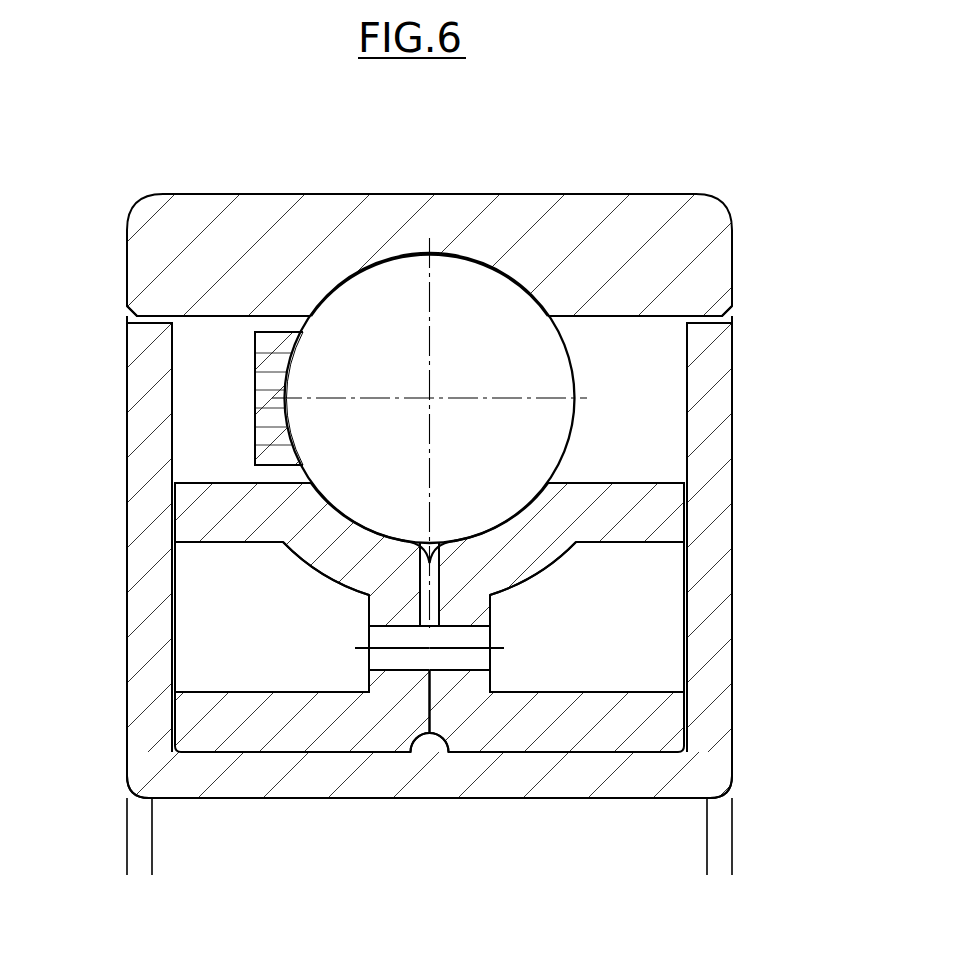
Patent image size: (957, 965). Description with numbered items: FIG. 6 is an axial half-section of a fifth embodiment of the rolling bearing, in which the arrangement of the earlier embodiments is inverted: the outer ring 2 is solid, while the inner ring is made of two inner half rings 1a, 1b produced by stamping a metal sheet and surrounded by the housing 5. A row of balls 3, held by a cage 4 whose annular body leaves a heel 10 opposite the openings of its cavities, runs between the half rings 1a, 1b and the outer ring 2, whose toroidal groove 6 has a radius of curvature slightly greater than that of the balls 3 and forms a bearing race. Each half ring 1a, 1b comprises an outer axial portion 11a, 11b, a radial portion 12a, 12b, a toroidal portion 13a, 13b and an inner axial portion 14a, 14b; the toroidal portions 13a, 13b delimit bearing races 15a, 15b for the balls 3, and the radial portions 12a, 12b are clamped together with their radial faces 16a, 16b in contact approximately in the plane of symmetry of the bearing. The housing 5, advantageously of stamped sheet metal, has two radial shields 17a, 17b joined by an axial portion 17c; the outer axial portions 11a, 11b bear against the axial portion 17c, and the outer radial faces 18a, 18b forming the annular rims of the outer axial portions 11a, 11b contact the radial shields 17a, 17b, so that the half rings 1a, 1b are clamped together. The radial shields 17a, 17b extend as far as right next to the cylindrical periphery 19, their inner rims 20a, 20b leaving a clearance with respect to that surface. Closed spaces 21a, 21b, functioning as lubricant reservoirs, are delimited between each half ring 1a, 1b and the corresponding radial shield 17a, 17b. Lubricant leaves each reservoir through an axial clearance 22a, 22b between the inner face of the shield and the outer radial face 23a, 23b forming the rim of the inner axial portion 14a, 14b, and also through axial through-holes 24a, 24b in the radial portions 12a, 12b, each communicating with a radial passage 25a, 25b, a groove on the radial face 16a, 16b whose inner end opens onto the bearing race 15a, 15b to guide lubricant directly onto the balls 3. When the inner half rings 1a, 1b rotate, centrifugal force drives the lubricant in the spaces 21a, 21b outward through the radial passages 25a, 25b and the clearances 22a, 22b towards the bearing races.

The inner half ring 1a is at (596, 705).
The inner half ring 1b is at (263, 705).
The outer ring 2 is at (279, 210).
The balls 3 is at (552, 374).
The cage 4 is at (264, 367).
The housing 5 is at (490, 805).
The toroidal groove 6 is at (492, 272).
The heel 10 is at (268, 439).
The outer axial portion 11a is at (601, 735).
The outer axial portion 11b is at (258, 735).
The radial portion 12a is at (477, 673).
The radial portion 12b is at (382, 673).
The toroidal portion 13a is at (522, 552).
The toroidal portion 13b is at (337, 552).
The inner axial portion 14a is at (641, 520).
The inner axial portion 14b is at (218, 520).
The bearing race 15a is at (497, 522).
The bearing race 15b is at (362, 522).
The radial face 16a is at (428, 721).
The radial face 16b is at (431, 698).
The radial shield 17a is at (707, 612).
The radial shield 17b is at (152, 612).
The axial portion 17c is at (438, 783).
The outer radial face 18a is at (687, 735).
The outer radial face 18b is at (172, 735).
The cylindrical periphery 19 is at (643, 318).
The inner rim 20a is at (709, 316).
The inner rim 20b is at (150, 316).
The closed space 21a is at (593, 645).
The closed space 21b is at (229, 645).
The axial clearance 22a is at (687, 491).
The axial clearance 22b is at (172, 491).
The outer radial face 23a is at (687, 511).
The outer radial face 23b is at (172, 511).
The axial through-holes 24a is at (476, 634).
The axial through-holes 24b is at (383, 634).
The radial passage 25a is at (439, 591).
The radial passage 25b is at (420, 591).